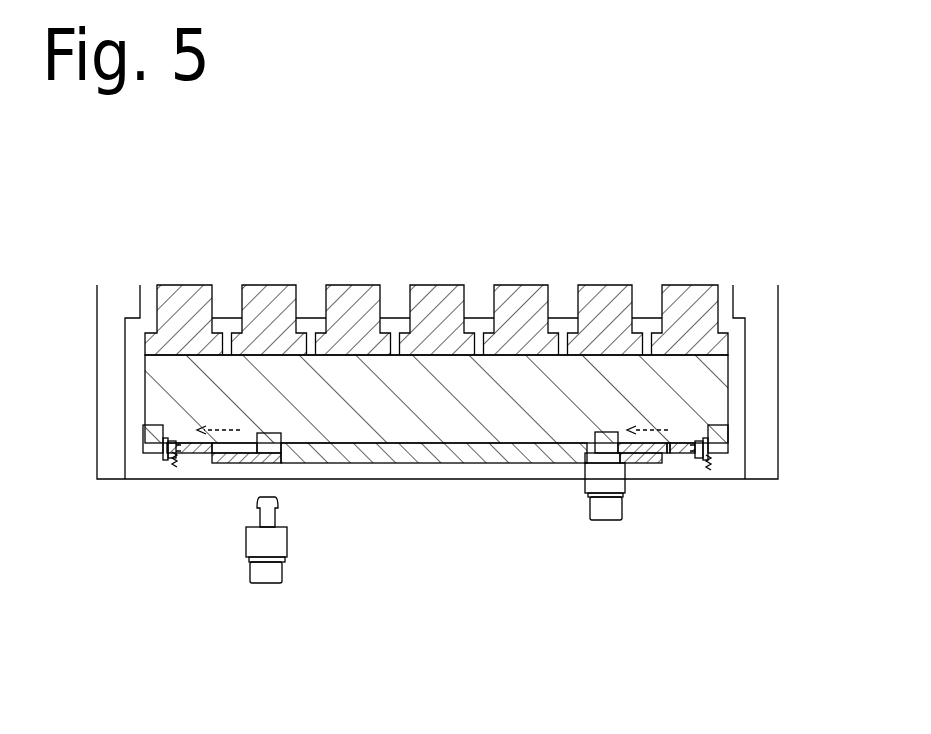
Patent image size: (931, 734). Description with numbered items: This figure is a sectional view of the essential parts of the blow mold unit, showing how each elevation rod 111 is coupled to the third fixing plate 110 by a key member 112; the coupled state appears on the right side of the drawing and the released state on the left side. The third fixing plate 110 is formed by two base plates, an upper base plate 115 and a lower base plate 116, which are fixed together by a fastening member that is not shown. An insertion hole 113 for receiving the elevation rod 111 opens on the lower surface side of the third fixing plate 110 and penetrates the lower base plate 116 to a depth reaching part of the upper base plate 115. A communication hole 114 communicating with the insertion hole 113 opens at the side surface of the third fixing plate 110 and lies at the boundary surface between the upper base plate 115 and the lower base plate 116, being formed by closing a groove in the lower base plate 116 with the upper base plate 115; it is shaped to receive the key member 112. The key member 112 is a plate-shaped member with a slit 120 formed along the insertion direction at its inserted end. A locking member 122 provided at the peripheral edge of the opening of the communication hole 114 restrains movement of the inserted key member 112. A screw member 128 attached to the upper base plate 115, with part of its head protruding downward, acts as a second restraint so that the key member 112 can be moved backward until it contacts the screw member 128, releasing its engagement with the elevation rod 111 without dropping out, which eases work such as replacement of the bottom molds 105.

The bottom mold 105 is at (434, 298).
The third fixing plate 110 is at (436, 499).
The elevation rod 111 is at (257, 538).
The key member 112 is at (200, 450).
The insertion hole 113 is at (270, 465).
The communication hole 114 is at (283, 448).
The upper base plate 115 is at (443, 415).
The lower base plate 116 is at (490, 453).
The slit 120 is at (243, 445).
The locking member 122 is at (158, 468).
The screw member 128 is at (143, 441).